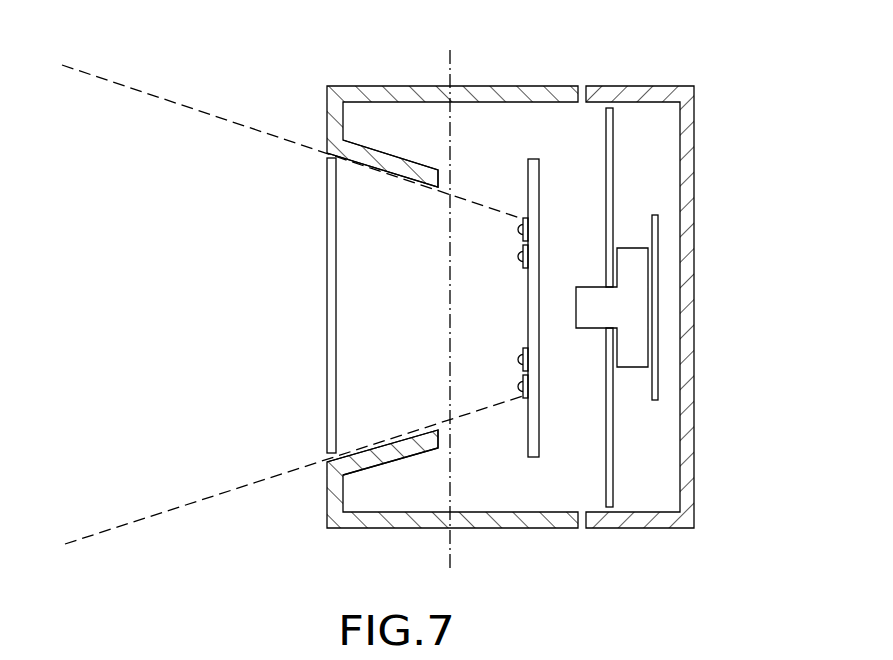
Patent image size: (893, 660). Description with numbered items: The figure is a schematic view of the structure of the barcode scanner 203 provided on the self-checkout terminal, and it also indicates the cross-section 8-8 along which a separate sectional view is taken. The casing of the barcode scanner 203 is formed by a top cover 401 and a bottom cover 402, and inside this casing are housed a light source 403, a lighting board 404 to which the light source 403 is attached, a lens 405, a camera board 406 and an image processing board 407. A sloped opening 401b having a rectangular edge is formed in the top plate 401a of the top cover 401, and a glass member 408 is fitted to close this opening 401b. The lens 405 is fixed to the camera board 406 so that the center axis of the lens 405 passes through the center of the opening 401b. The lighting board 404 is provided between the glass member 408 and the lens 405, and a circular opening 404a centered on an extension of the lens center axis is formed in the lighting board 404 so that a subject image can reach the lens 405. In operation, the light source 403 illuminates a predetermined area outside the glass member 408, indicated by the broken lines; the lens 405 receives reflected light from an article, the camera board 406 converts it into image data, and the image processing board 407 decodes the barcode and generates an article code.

The barcode scanner 203 is at (675, 53).
The cross-section 8- 8 is at (447, 62).
The top cover 401 is at (552, 85).
The top plate 401a is at (326, 113).
The opening 401b is at (383, 275).
The bottom cover 402 is at (632, 85).
The light source 403 is at (502, 227).
The lighting board 404 is at (540, 166).
The circular opening 404a is at (534, 268).
The lens 405 is at (588, 287).
The camera board 406 is at (652, 230).
The image processing board 407 is at (613, 123).
The glass member 408 is at (327, 293).